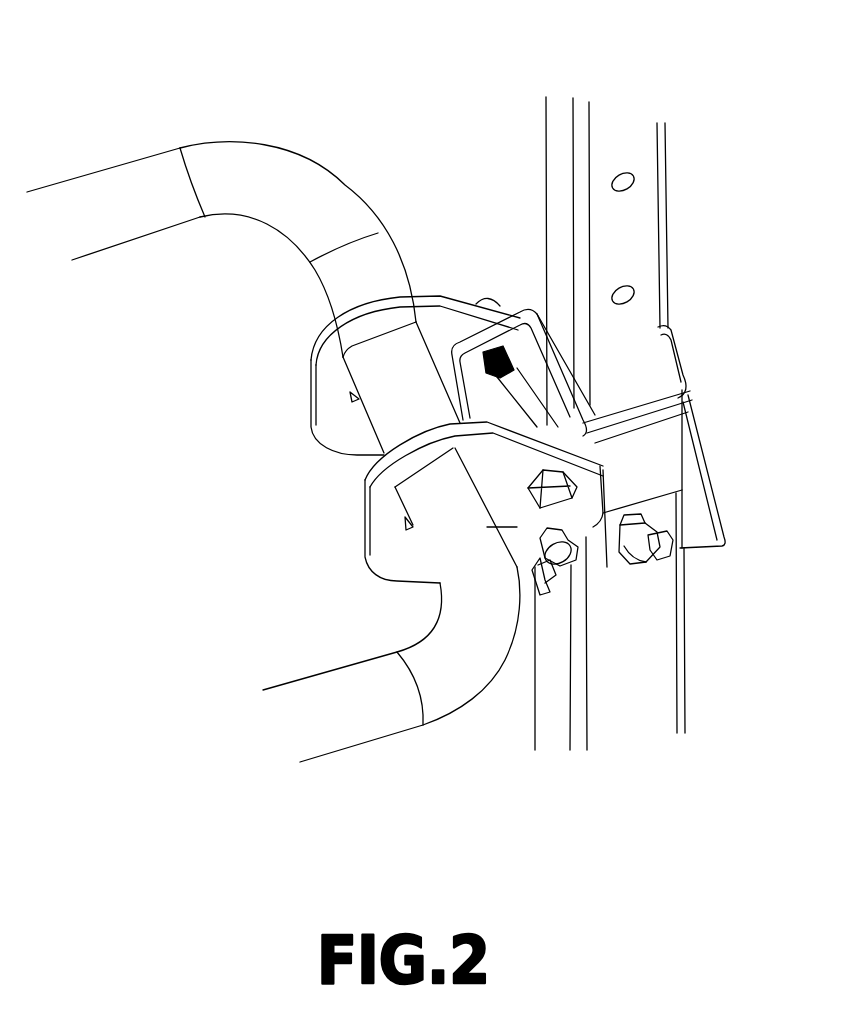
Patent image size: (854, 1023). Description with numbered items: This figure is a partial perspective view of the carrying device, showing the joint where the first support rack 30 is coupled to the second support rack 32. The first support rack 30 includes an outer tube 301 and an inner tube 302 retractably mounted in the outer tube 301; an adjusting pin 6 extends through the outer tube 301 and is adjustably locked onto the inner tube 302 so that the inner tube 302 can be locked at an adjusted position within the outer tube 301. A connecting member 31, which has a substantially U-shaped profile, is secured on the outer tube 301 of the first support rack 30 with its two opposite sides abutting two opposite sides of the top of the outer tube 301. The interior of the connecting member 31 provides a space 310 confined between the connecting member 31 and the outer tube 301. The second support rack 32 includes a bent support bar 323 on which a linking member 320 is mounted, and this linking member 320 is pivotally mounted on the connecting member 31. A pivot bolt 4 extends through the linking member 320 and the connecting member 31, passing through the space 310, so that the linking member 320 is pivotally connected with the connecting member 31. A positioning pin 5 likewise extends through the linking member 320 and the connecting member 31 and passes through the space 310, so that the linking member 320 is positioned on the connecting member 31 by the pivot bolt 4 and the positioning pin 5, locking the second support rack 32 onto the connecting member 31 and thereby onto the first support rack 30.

The first support rack 30 is at (674, 109).
The outer tube 301 is at (657, 648).
The inner tube 302 is at (643, 273).
The connecting member 31 is at (663, 440).
The space 310 is at (475, 378).
The second support rack 32 is at (218, 327).
The linking member 320 is at (390, 560).
The support bar 323 is at (305, 170).
The pivot bolt 4 is at (577, 490).
The positioning pin 5 is at (557, 590).
The adjusting pin 6 is at (647, 562).